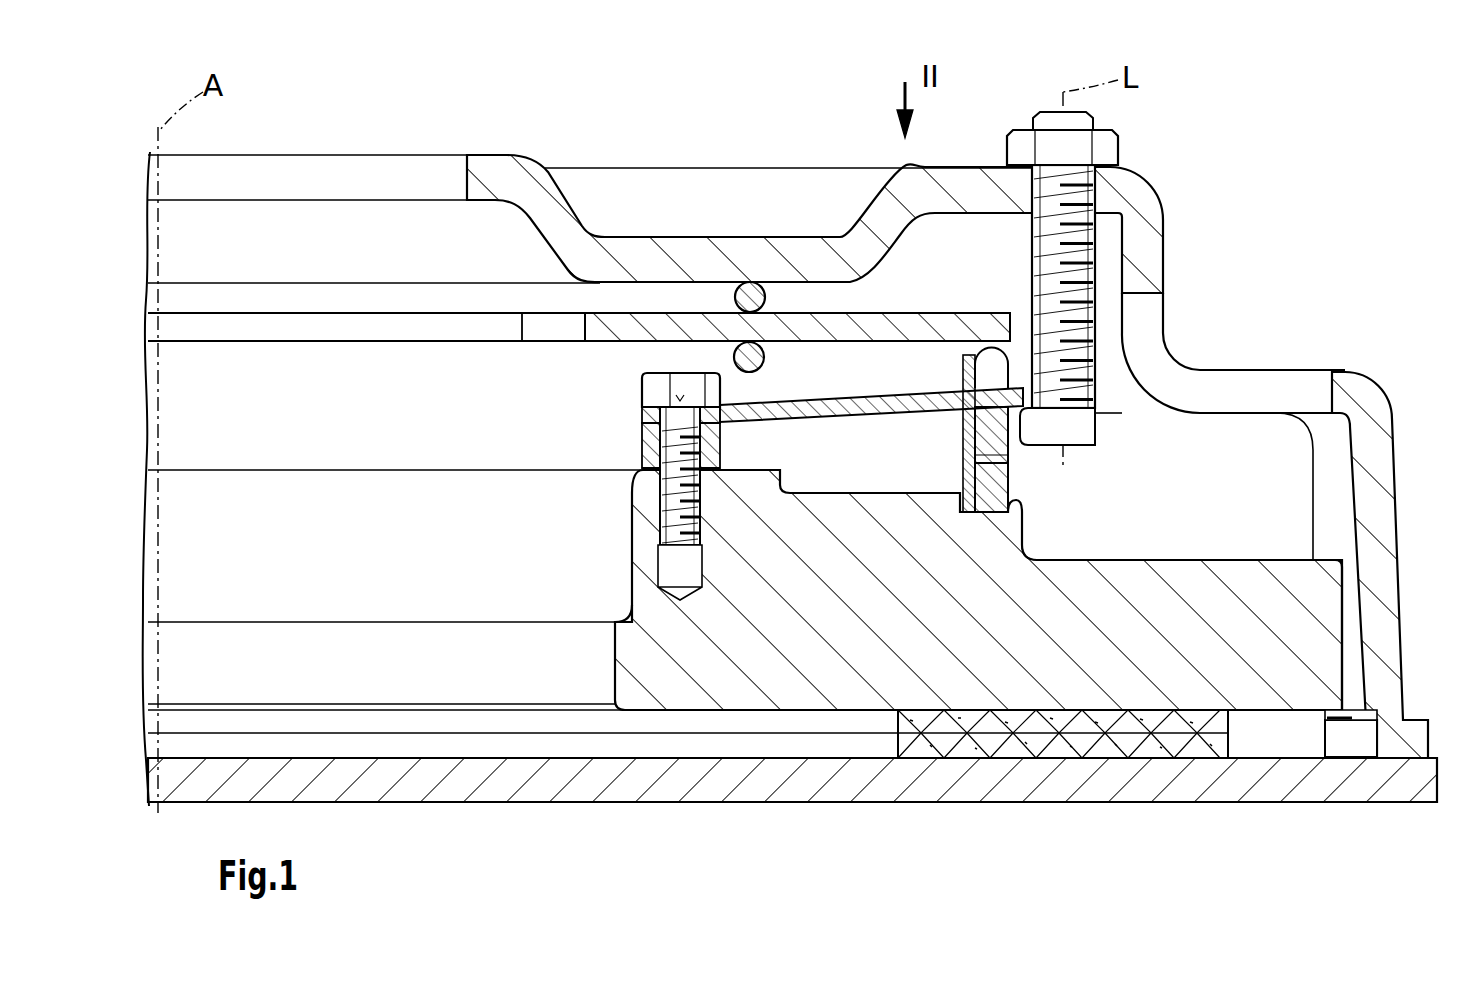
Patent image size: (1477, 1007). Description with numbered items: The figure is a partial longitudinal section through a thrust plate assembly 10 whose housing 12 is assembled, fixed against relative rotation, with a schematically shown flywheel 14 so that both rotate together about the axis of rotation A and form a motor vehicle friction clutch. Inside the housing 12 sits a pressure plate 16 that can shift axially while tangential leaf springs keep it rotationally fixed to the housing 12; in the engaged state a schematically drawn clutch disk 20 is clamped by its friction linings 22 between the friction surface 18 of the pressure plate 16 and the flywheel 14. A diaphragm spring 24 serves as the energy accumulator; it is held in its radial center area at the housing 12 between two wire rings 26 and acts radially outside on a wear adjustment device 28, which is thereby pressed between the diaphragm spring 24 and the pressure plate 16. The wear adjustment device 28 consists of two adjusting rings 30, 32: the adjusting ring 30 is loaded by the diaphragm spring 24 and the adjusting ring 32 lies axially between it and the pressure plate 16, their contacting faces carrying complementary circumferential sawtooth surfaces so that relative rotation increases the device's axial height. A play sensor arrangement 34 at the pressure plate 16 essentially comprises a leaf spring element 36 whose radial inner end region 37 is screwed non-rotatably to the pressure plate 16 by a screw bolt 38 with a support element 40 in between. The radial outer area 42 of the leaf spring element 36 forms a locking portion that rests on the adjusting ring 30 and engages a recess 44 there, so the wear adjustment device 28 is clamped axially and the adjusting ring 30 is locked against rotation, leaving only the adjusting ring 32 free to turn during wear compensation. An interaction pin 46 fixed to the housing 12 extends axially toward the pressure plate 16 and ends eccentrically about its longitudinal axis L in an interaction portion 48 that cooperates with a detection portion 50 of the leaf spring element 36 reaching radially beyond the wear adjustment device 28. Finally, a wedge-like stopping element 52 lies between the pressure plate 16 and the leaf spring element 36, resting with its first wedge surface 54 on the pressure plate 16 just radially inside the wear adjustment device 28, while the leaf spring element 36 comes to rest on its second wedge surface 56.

The thrust plate assembly 10 is at (1232, 186).
The housing 12 is at (1390, 388).
The flywheel 14 is at (1273, 797).
The pressure plate 16 is at (1335, 587).
The friction surface 18 is at (1355, 714).
The clutch disk 20 is at (632, 737).
The friction linings 22 is at (1150, 728).
The diaphragm spring 24 is at (470, 332).
The wire rings 26 is at (746, 282).
The wear adjustment device 28 is at (1055, 485).
The adjusting ring 30 is at (963, 431).
The adjusting ring 32 is at (963, 488).
The play sensor arrangement 34 is at (860, 380).
The leaf spring element 36 is at (918, 390).
The radial inner end region 37 is at (647, 418).
The screw bolt 38 is at (647, 438).
The support element 40 is at (652, 457).
The radial outer area 42 is at (1097, 322).
The recess 44 is at (1097, 281).
The interaction pin 46 is at (1085, 192).
The interaction portion 48 is at (1036, 562).
The detection portion 50 is at (1097, 378).
The stopping element 52 is at (975, 460).
The first wedge surface 54 is at (968, 514).
The second wedge surface 56 is at (973, 388).